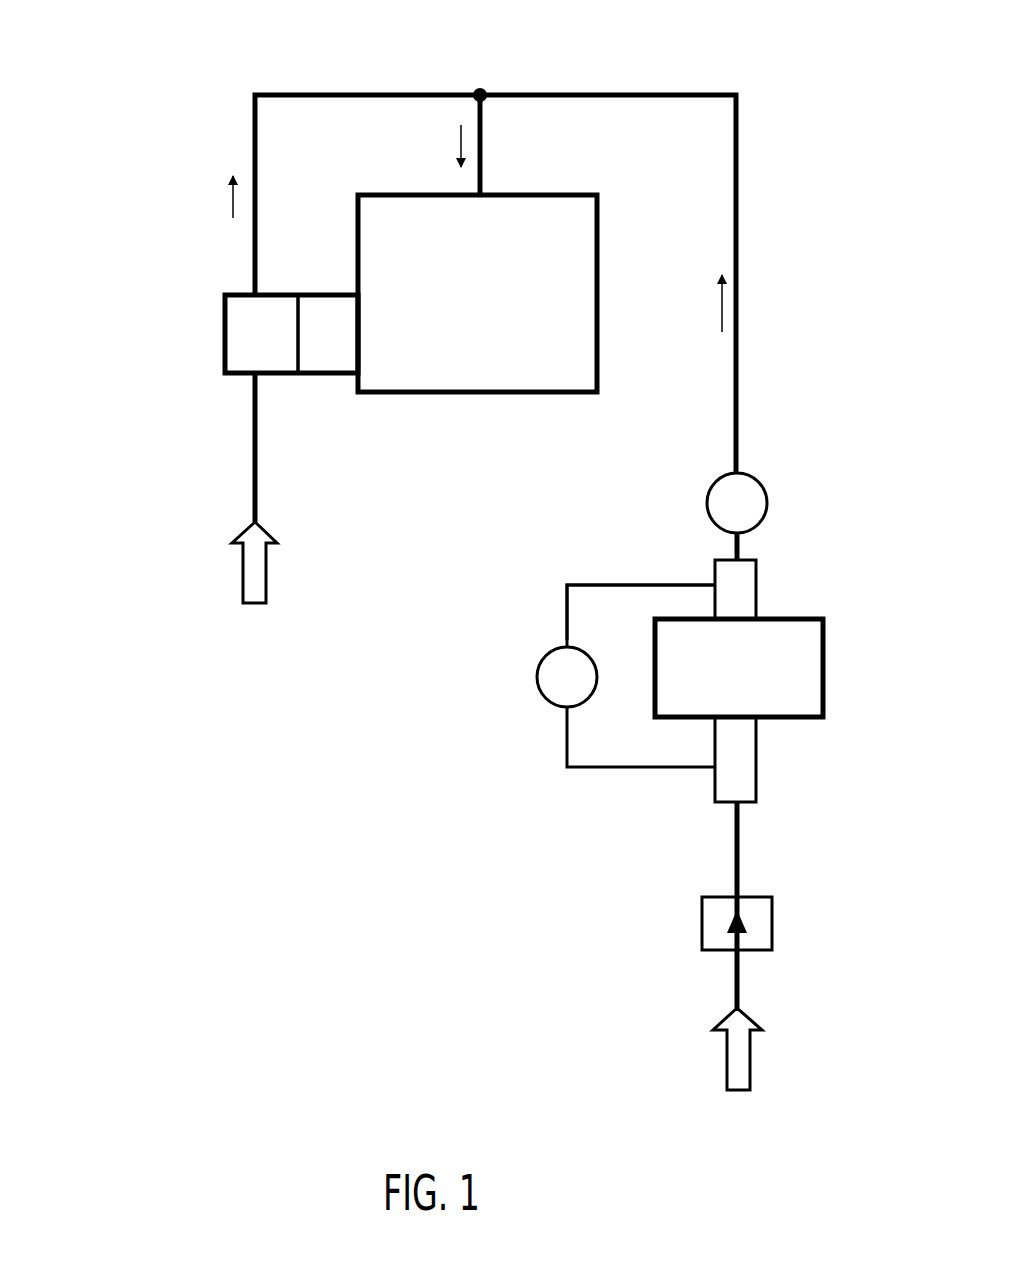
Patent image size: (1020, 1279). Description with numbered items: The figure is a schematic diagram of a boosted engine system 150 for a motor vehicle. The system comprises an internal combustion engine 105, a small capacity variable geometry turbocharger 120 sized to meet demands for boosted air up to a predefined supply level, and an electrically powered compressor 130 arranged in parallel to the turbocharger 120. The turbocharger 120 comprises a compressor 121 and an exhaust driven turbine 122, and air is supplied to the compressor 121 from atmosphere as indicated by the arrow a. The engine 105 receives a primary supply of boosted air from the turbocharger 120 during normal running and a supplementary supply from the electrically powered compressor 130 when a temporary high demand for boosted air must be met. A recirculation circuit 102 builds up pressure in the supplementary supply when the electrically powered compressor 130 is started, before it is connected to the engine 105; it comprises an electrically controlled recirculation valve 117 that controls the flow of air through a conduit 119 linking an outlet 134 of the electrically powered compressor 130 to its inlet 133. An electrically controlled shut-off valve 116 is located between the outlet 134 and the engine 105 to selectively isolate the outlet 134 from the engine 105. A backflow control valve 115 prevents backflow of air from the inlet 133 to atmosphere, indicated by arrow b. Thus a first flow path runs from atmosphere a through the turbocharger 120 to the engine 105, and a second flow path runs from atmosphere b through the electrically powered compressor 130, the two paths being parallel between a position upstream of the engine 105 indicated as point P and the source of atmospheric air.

The boosted engine system 150 is at (290, 971).
The internal combustion engine 105 is at (465, 400).
The small capacity variable geometry turbocharger 120 is at (220, 323).
The compressor 121 is at (225, 372).
The exhaust driven turbine 122 is at (318, 377).
The electrically controlled shut-off valve 116 is at (708, 498).
The electrically controlled recirculation valve 117 is at (538, 680).
The conduit 119 is at (598, 583).
The recirculation circuit 102 is at (564, 727).
The electrically powered compressor 130 is at (739, 668).
The inlet 133 is at (758, 756).
The outlet 134 is at (758, 598).
The backflow control valve 115 is at (700, 930).
The point upstream of the engine P is at (478, 93).
The arrow indicating atmospheric air supply a is at (240, 562).
The arrow indicating atmospheric air supply b is at (725, 1053).